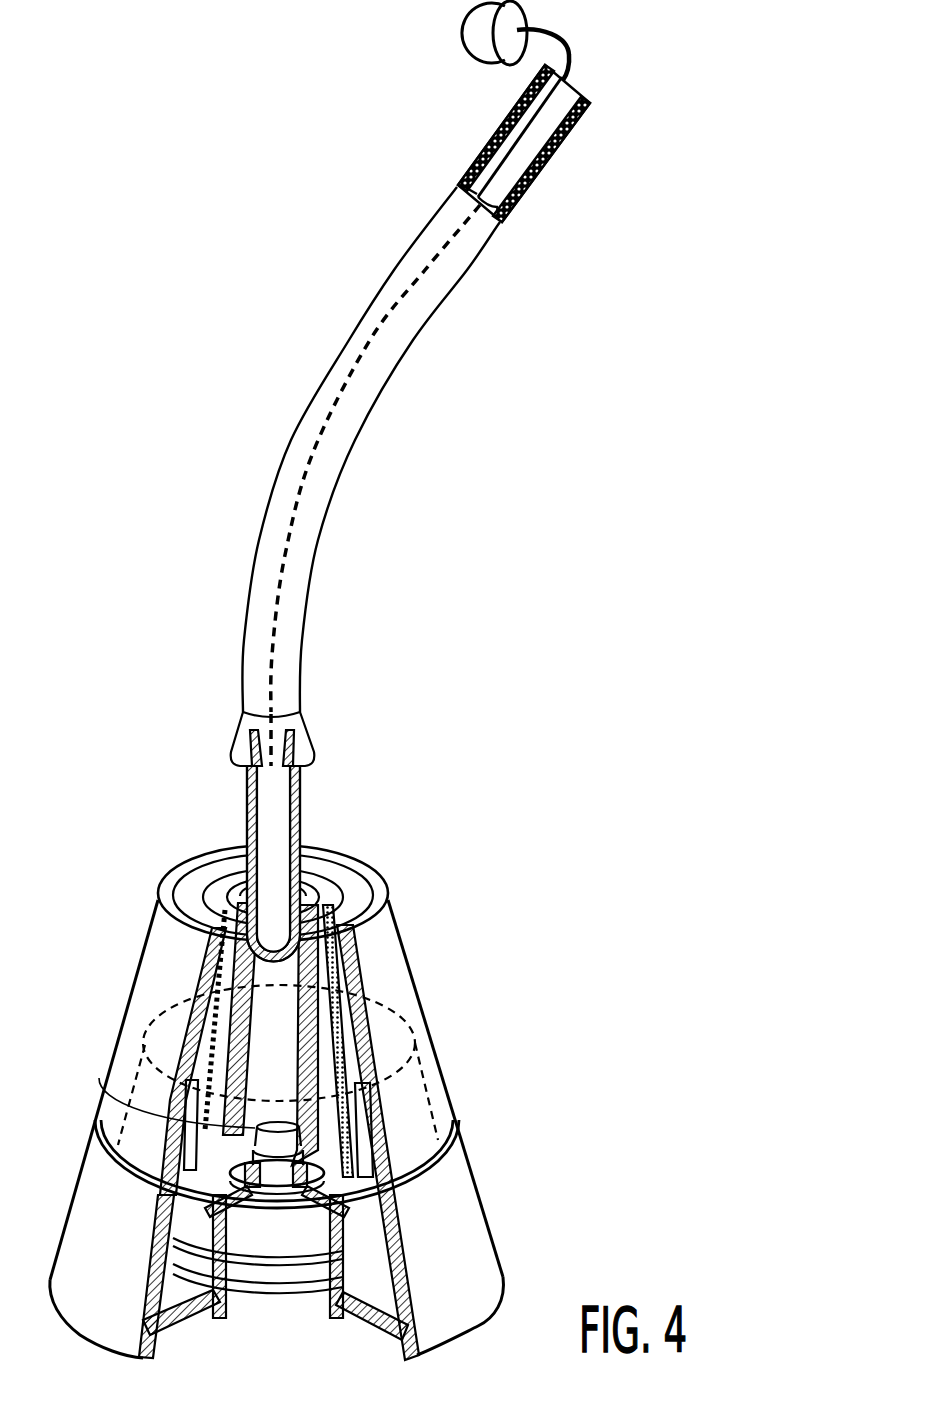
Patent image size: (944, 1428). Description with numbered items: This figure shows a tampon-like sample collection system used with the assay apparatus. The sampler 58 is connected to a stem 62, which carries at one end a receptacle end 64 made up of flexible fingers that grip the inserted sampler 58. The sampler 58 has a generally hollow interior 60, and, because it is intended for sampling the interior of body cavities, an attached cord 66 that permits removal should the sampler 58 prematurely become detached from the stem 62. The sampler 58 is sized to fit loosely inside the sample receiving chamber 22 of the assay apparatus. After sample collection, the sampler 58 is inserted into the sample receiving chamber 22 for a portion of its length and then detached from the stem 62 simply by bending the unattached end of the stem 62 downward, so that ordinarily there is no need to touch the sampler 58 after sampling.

The sample receiving chamber 22 is at (105, 1102).
The sampler 58 is at (300, 825).
The hollow interior 60 is at (265, 812).
The stem 62 is at (440, 297).
The receptacle end 64 is at (302, 717).
The cord 66 is at (562, 34).